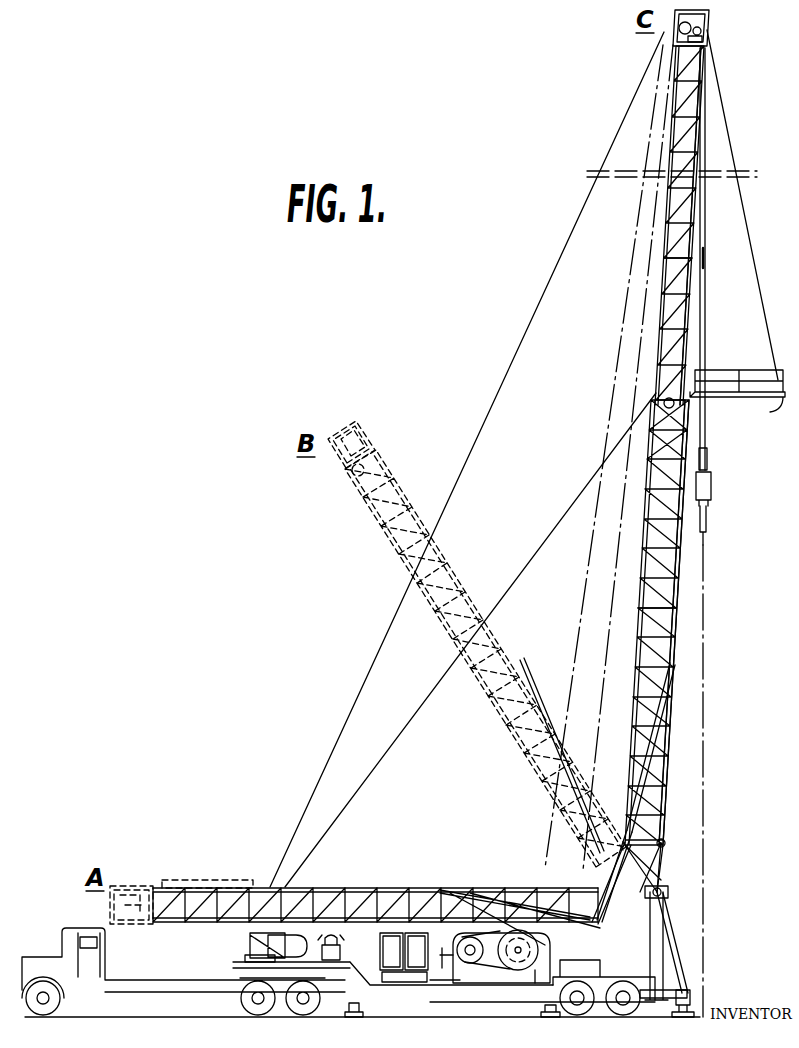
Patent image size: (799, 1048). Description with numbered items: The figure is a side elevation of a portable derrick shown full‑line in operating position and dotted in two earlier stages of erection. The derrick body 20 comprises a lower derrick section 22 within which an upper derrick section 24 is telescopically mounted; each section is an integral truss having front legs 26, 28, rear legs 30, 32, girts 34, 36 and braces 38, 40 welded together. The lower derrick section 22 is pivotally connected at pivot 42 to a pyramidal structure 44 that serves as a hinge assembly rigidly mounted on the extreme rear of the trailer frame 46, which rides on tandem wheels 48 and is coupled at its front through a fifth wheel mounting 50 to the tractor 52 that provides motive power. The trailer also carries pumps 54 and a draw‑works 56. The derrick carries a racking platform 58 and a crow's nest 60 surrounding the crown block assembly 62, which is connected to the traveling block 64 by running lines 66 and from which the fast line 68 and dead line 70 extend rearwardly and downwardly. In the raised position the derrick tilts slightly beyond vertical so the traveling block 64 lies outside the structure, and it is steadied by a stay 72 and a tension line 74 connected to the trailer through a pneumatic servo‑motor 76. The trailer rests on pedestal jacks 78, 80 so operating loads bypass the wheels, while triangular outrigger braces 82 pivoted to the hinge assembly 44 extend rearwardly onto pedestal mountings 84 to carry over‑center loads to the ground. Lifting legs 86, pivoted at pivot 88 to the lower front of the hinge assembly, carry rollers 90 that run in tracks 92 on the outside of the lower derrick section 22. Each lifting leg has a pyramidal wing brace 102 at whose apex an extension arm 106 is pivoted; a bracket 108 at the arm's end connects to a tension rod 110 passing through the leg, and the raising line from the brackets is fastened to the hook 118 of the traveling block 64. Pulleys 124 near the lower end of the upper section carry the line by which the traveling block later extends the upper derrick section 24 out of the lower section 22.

The derrick body 20 is at (314, 878).
The lower derrick section 22 is at (519, 880).
The upper derrick section 24 is at (162, 884).
The front leg 26 is at (670, 745).
The front leg 28 is at (697, 310).
The rear leg 30 is at (643, 646).
The rear leg 32 is at (668, 205).
The girt 34 is at (645, 548).
The girt 36 is at (712, 140).
The brace 38 is at (640, 605).
The brace 40 is at (664, 248).
The pivot 42 is at (664, 891).
The pyramidal structure 44 is at (650, 945).
The trailer frame 46 is at (655, 978).
The tandem wheels 48 is at (636, 1020).
The fifth wheel mounting 50 is at (260, 965).
The tractor 52 is at (155, 986).
The pumps 54 is at (336, 950).
The draw-works 56 is at (482, 980).
The racking platform 58 is at (750, 400).
The crow's nest 60 is at (712, 18).
The crown block assembly 62 is at (700, 40).
The traveling block 64 is at (712, 486).
The running lines 66 is at (705, 347).
The fast line 68 is at (625, 318).
The dead line 70 is at (638, 353).
The stay 72 is at (530, 320).
The tension line 74 is at (555, 533).
The servo-motor 76 is at (228, 932).
The pedestal jack 78 is at (345, 1015).
The pedestal jack 80 is at (548, 1015).
The outrigger brace 82 is at (683, 955).
The pedestal mounting 84 is at (690, 1008).
The lifting leg 86 is at (618, 862).
The pivot 88 is at (598, 960).
The roller 90 is at (637, 783).
The track 92 is at (670, 680).
The wing brace 102 is at (650, 892).
The extension arm 106 is at (658, 862).
The bracket 108 is at (665, 844).
The tension rod 110 is at (660, 835).
The hook 118 is at (708, 515).
The pulleys 124 is at (707, 455).